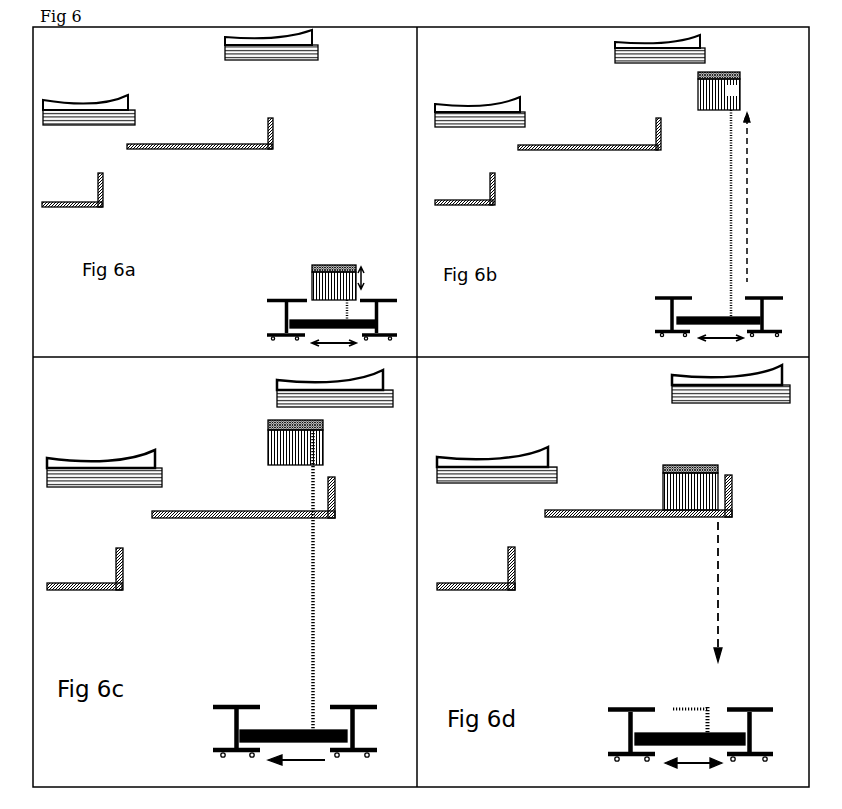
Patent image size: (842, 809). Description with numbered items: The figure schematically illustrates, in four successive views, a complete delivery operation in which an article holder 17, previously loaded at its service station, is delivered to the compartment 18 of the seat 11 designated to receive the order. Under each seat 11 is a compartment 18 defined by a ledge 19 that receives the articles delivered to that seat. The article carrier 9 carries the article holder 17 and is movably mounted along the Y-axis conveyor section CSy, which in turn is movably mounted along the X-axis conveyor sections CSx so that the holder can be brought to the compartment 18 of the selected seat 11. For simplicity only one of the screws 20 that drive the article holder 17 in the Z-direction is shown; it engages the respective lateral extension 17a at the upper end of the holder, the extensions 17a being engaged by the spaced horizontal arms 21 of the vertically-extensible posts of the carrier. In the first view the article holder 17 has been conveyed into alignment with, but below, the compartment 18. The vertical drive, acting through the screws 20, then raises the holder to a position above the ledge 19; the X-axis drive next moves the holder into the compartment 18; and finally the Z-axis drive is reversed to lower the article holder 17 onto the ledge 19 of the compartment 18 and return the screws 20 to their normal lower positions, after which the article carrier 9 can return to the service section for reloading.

In FIG. 6A, the article carrier 9 is at (297, 300).
In FIG. 6B, the article carrier 9 is at (700, 297).
In FIG. 6C, the article carrier 9 is at (267, 730).
In FIG. 6D, the article carrier 9 is at (658, 732).
In FIG. 6A, the seat 11 is at (108, 98).
In FIG. 6B, the seat 11 is at (607, 42).
In FIG. 6C, the seat 11 is at (277, 378).
In FIG. 6D, the seat 11 is at (672, 373).
In FIG. 6A, the article holder 17 is at (312, 281).
In FIG. 6B, the article holder 17 is at (716, 72).
In FIG. 6C, the article holder 17 is at (268, 447).
In FIG. 6D, the article holder 17 is at (662, 482).
In FIG. 6A, the lateral extension 17a is at (334, 265).
In FIG. 6B, the lateral extension 17a is at (719, 75).
In FIG. 6C, the lateral extension 17a is at (270, 422).
In FIG. 6D, the lateral extension 17a is at (690, 463).
In FIG. 6A, the compartment 18 is at (176, 160).
In FIG. 6B, the compartment 18 is at (564, 161).
In FIG. 6C, the compartment 18 is at (228, 527).
In FIG. 6D, the compartment 18 is at (615, 516).
In FIG. 6A, the ledge 19 is at (203, 143).
In FIG. 6B, the ledge 19 is at (615, 143).
In FIG. 6C, the ledge 19 is at (232, 510).
In FIG. 6D, the ledge 19 is at (612, 508).
In FIG. 6A, the screw 20 is at (346, 310).
In FIG. 6B, the screw 20 is at (729, 235).
In FIG. 6C, the screw 20 is at (310, 578).
In FIG. 6D, the screw 20 is at (706, 718).
In FIG. 6A, the horizontal arm 21 is at (301, 275).
In FIG. 6B, the horizontal arm 21 is at (698, 78).
In FIG. 6C, the horizontal arm 21 is at (323, 428).
In FIG. 6D, the horizontal arm 21 is at (697, 700).
In FIG. 6A, the X-axis conveyor section CSx is at (266, 334).
In FIG. 6B, the X-axis conveyor section CSx is at (655, 330).
In FIG. 6C, the X-axis conveyor section CSx is at (215, 747).
In FIG. 6D, the X-axis conveyor section CSx is at (607, 752).
In FIG. 6A, the Y-axis conveyor section CSy is at (357, 316).
In FIG. 6B, the Y-axis conveyor section CSy is at (738, 317).
In FIG. 6C, the Y-axis conveyor section CSy is at (323, 730).
In FIG. 6D, the Y-axis conveyor section CSy is at (722, 655).